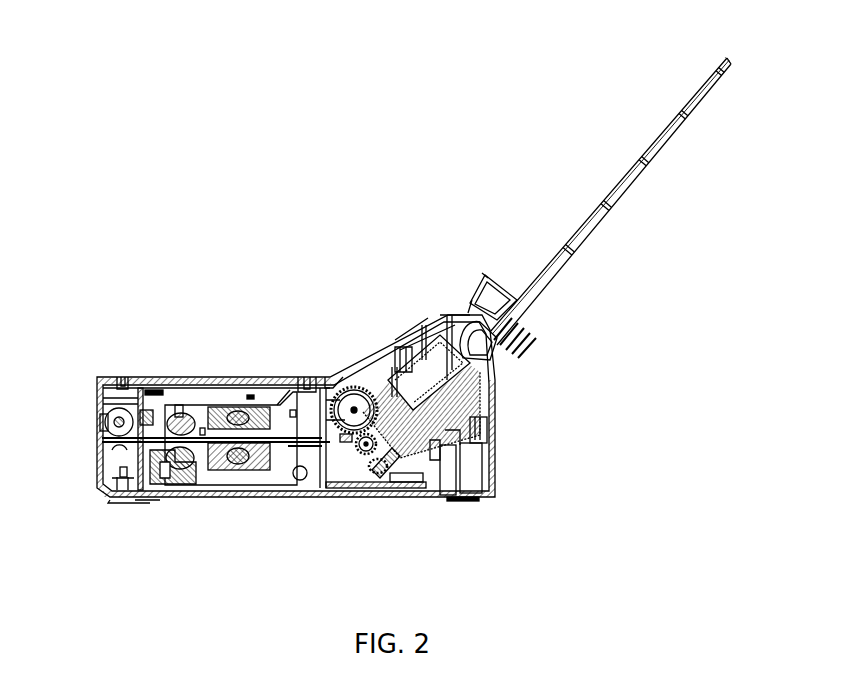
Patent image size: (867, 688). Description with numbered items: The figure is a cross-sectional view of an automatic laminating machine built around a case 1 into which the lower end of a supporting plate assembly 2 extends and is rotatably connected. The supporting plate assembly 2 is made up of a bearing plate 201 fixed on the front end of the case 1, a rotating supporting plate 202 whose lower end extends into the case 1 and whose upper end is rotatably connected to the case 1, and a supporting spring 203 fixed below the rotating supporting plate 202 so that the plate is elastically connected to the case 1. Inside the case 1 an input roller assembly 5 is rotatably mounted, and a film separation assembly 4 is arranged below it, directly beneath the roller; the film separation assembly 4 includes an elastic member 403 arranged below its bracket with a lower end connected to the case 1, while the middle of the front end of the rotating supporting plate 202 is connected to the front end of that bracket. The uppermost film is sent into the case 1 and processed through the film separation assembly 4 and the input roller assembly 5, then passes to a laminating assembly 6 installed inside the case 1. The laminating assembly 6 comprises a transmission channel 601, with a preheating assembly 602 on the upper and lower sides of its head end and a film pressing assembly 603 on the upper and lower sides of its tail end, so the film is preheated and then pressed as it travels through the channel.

The case 1 is at (92, 470).
The supporting plate assembly 2 is at (729, 58).
The bearing plate 201 is at (632, 192).
The rotating supporting plate 202 is at (490, 366).
The supporting spring 203 is at (405, 500).
The film separation assembly 4 is at (342, 498).
The elastic member 403 is at (388, 500).
The input roller assembly 5 is at (352, 386).
The laminating assembly 6 is at (196, 404).
The transmission channel 601 is at (310, 384).
The preheating assembly 602 is at (293, 480).
The film pressing assembly 603 is at (192, 478).